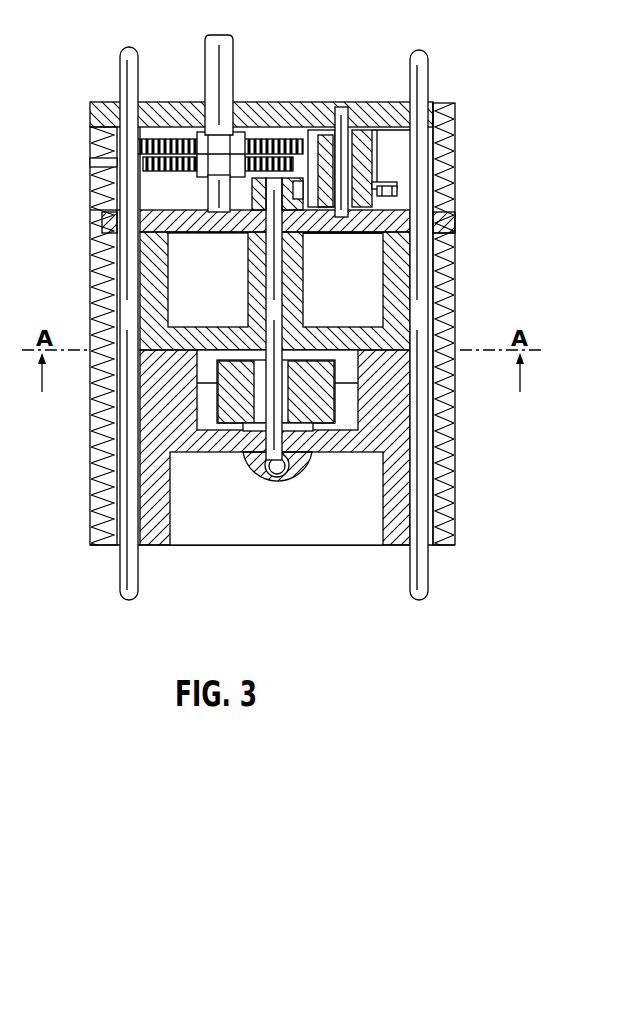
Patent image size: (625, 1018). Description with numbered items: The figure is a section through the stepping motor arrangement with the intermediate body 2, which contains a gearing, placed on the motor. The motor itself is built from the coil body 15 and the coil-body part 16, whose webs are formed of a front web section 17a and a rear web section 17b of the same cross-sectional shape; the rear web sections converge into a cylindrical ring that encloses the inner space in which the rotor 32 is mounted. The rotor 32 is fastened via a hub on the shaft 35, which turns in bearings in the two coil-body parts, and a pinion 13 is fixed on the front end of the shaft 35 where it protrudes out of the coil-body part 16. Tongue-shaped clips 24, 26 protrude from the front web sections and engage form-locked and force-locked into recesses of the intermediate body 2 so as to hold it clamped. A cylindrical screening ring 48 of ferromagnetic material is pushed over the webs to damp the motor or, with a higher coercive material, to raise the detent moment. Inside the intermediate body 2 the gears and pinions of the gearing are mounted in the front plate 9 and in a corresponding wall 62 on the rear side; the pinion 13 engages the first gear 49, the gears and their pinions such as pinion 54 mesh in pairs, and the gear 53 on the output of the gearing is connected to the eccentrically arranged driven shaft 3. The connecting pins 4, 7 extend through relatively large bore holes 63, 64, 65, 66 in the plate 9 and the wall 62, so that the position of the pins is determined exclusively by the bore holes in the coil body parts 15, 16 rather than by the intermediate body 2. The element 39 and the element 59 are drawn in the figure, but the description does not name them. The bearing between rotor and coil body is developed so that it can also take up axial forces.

The intermediate body 2 is at (450, 199).
The driven shaft 3 is at (214, 38).
The connecting pin 4 is at (120, 75).
The connecting pin 7 is at (421, 76).
The front plate 9 is at (325, 106).
The pinion 13 is at (305, 128).
The coil body 15 is at (367, 466).
The coil-body part 16 is at (372, 296).
The front web section 17a is at (108, 262).
The rear web section 17b is at (108, 460).
The tongue-shaped clip 24 is at (102, 225).
The tongue-shaped clip 26 is at (454, 241).
The rotor 32 is at (223, 440).
The shaft 35 is at (255, 462).
The ball 39 is at (283, 496).
The screening ring 48 is at (93, 294).
The gear 49 is at (440, 200).
The gear 53 is at (262, 137).
The pinion 54 is at (400, 162).
The slot 59 is at (93, 163).
The wall 62 is at (370, 229).
The bore hole 63 is at (93, 118).
The bore hole 64 is at (435, 103).
The bore hole 65 is at (117, 206).
The bore hole 66 is at (452, 224).